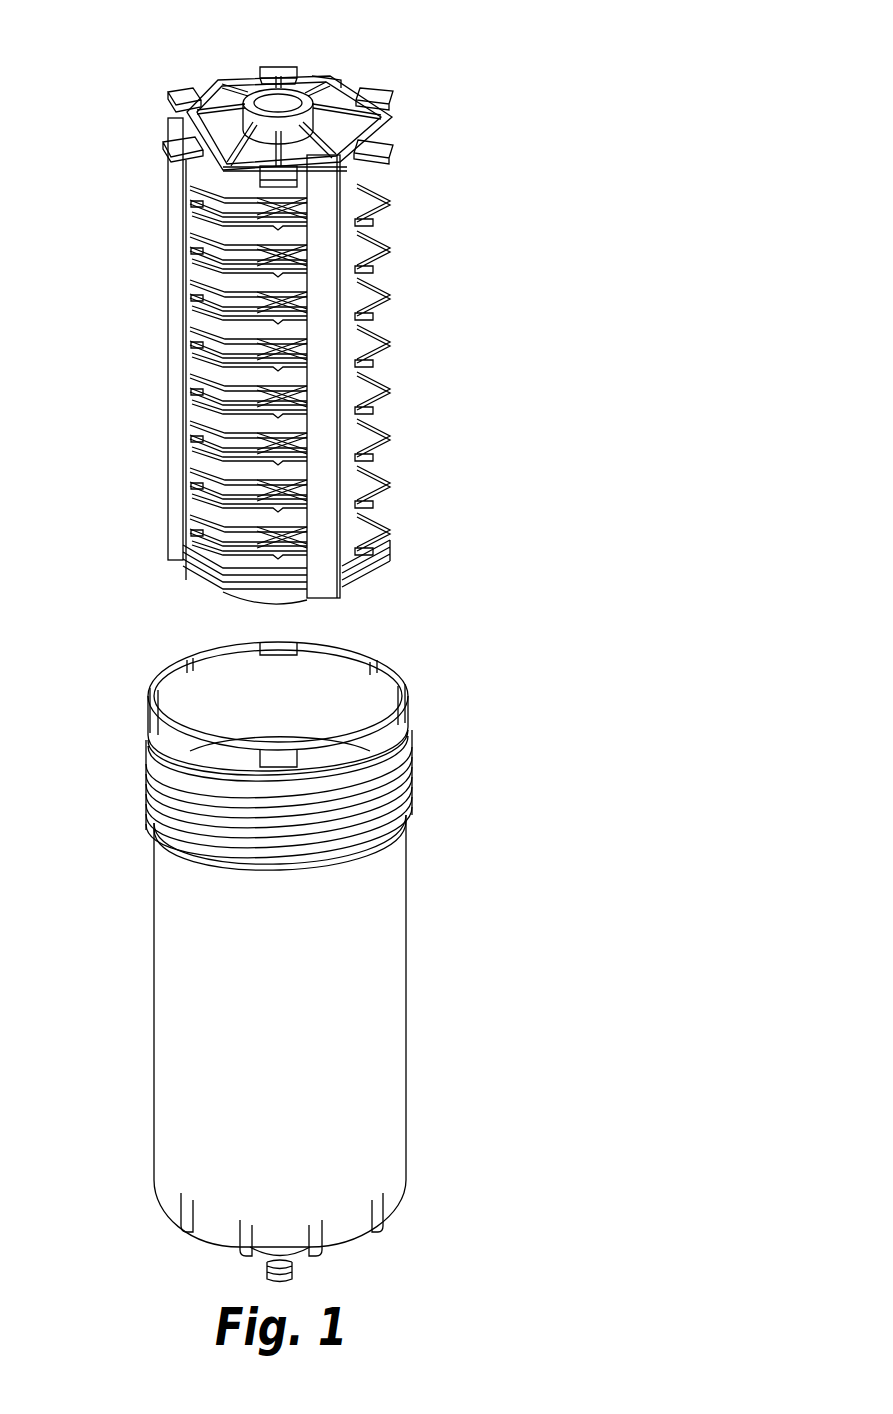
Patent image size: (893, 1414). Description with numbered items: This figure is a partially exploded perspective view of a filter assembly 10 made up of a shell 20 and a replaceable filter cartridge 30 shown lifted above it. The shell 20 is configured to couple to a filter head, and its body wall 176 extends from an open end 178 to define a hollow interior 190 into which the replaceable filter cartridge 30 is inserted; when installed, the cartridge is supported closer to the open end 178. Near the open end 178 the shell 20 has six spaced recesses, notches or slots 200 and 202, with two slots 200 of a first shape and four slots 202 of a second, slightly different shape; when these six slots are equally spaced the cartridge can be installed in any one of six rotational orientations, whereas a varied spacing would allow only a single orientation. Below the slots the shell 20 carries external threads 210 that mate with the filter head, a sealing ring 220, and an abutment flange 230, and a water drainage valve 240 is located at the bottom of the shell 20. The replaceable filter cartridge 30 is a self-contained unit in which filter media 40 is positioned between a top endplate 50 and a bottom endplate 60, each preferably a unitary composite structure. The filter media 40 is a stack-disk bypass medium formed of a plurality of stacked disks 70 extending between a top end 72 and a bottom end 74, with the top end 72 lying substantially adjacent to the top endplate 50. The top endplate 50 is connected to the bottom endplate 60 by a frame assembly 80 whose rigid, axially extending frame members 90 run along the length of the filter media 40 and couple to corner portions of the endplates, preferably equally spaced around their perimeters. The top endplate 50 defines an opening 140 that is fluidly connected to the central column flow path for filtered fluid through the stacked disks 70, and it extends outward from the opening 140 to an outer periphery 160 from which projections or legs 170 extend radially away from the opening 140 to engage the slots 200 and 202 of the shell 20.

The filter assembly 10 is at (314, 648).
The shell 20 is at (296, 949).
The replaceable filter cartridge 30 is at (269, 302).
The filter media 40 is at (283, 361).
The top endplate 50 is at (329, 93).
The bottom endplate 60 is at (276, 572).
The stacked disks 70 is at (388, 468).
The top end 72 is at (436, 108).
The bottom end 74 is at (167, 567).
The frame assembly 80 is at (141, 241).
The frame members 90 is at (243, 358).
The opening 140 is at (285, 98).
The outer periphery 160 is at (388, 123).
The projections 170 is at (272, 67).
The body wall 176 is at (405, 892).
The open end 178 is at (305, 754).
The hollow interior 190 is at (344, 736).
The slots 200 is at (405, 760).
The slots 202 is at (172, 672).
The external threads 210 is at (296, 789).
The sealing ring 220 is at (145, 788).
The abutment flange 230 is at (143, 813).
The water drainage valve 240 is at (306, 1280).